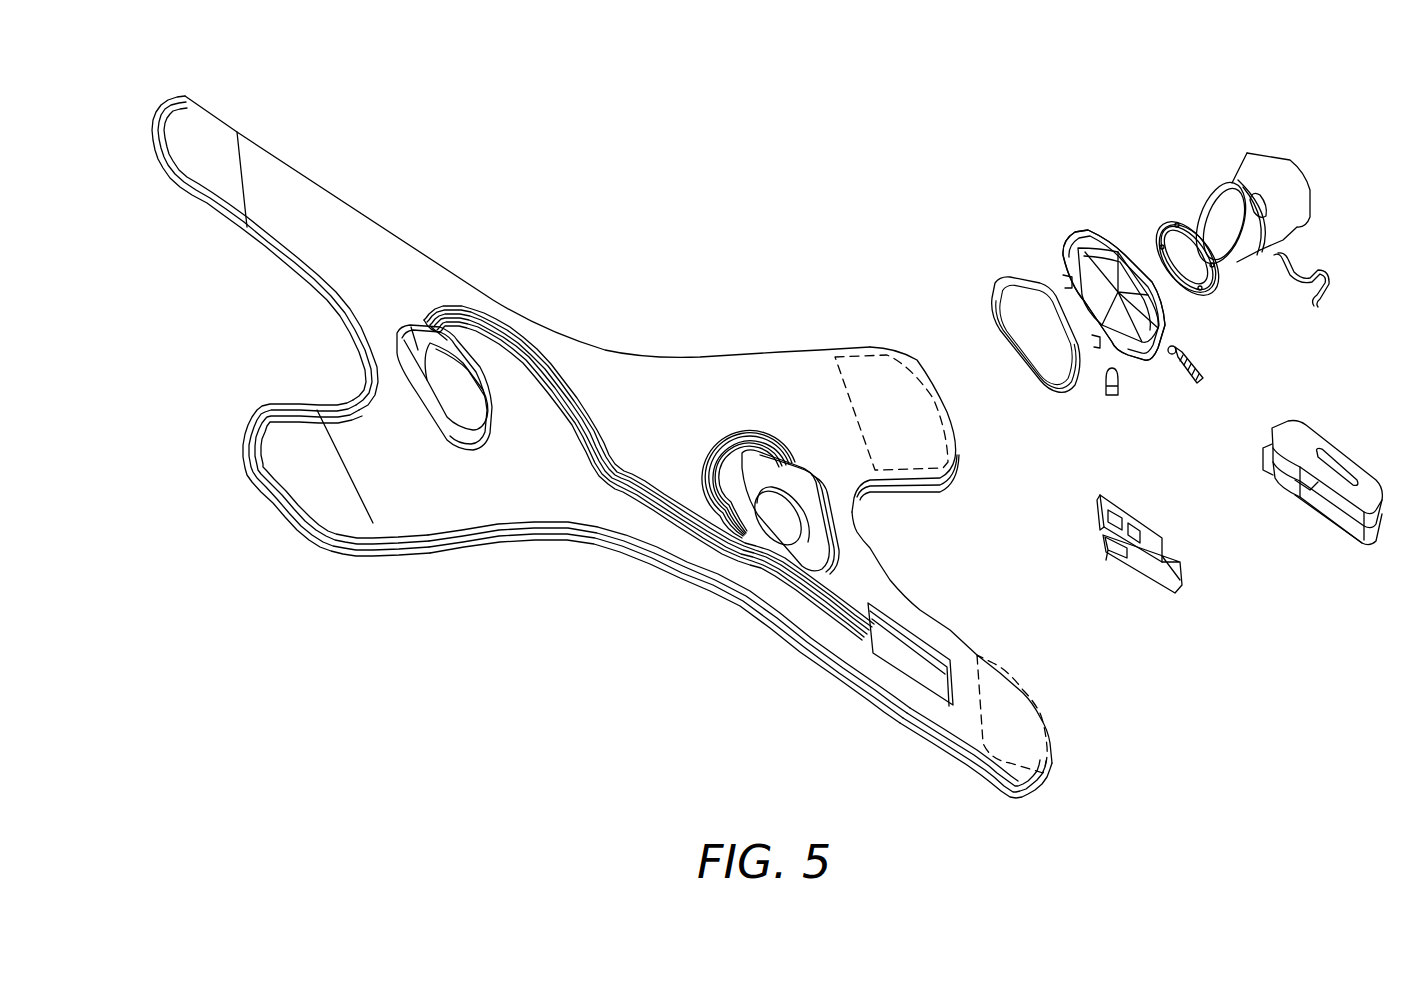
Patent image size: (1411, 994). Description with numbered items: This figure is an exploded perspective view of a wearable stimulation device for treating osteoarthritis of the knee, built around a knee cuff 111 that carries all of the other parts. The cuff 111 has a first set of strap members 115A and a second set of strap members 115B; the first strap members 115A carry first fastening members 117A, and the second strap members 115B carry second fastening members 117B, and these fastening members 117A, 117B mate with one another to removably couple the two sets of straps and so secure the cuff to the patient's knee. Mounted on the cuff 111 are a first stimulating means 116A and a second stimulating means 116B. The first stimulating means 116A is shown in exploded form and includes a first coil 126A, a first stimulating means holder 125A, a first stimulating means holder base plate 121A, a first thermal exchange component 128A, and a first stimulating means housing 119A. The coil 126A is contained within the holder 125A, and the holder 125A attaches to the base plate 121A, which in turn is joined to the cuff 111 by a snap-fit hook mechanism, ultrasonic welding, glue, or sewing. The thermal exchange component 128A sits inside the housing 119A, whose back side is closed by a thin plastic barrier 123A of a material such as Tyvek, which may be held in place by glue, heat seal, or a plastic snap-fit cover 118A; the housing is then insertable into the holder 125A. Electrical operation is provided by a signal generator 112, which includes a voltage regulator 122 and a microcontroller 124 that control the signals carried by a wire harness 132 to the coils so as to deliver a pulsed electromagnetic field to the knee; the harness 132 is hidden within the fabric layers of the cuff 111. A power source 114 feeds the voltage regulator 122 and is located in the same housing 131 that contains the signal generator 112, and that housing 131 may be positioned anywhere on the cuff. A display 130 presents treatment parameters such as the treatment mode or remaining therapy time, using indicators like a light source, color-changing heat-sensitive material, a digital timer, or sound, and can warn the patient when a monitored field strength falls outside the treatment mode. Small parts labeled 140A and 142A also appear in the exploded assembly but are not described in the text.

The knee cuff 111 is at (432, 268).
The signal generator 112 is at (1148, 533).
The power source 114 is at (1177, 563).
The first set of strap members 115A is at (1074, 768).
The second set of strap members 115B is at (143, 97).
The first stimulating means 116A is at (1170, 88).
The second stimulating means 116B is at (447, 448).
The first fastening members 117A is at (1017, 810).
The second fastening members 117B is at (358, 565).
The plastic snap-fit cover 118A is at (1214, 287).
The first stimulating means housing 119A is at (1277, 153).
The first stimulating means holder base plate 121A is at (783, 483).
The voltage regulator 122 is at (1115, 553).
The thin plastic barrier 123A is at (1200, 200).
The microcontroller 124 is at (1132, 523).
The first stimulating means holder 125A is at (1091, 232).
The first coil 126A is at (1003, 283).
The first thermal exchange component 128A is at (1230, 186).
The display 130 is at (1343, 460).
The housing 131 is at (1333, 530).
The wire harness 132 is at (643, 507).
The spring clip 140A is at (1313, 302).
The fastener 142A is at (1197, 376).